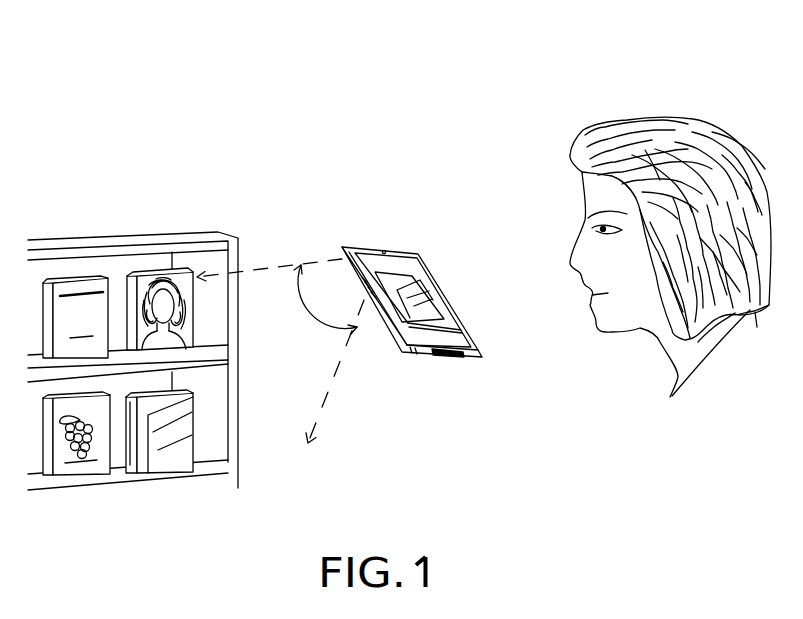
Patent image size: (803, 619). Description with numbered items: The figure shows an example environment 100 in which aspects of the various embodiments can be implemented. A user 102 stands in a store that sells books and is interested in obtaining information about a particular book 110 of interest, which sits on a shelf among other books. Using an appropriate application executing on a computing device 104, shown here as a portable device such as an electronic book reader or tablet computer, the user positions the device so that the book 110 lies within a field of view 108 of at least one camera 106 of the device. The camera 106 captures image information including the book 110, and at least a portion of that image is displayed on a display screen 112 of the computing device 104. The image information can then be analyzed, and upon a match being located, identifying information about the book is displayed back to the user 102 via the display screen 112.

The environment 100 is at (94, 103).
The user 102 is at (537, 172).
The computing device 104 is at (413, 358).
The camera 106 is at (384, 252).
The field of view 108 is at (280, 351).
The book 110 is at (177, 468).
The display screen 112 is at (437, 283).